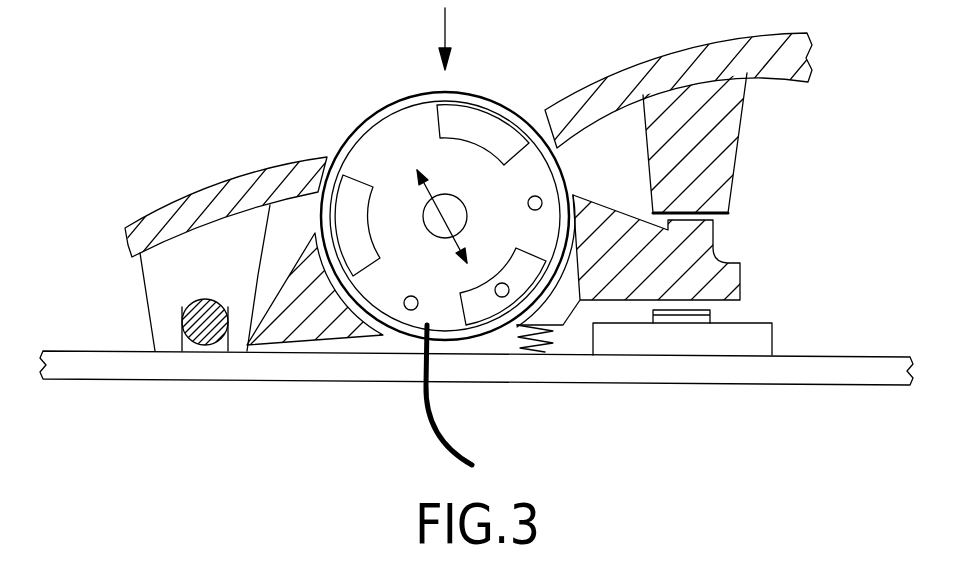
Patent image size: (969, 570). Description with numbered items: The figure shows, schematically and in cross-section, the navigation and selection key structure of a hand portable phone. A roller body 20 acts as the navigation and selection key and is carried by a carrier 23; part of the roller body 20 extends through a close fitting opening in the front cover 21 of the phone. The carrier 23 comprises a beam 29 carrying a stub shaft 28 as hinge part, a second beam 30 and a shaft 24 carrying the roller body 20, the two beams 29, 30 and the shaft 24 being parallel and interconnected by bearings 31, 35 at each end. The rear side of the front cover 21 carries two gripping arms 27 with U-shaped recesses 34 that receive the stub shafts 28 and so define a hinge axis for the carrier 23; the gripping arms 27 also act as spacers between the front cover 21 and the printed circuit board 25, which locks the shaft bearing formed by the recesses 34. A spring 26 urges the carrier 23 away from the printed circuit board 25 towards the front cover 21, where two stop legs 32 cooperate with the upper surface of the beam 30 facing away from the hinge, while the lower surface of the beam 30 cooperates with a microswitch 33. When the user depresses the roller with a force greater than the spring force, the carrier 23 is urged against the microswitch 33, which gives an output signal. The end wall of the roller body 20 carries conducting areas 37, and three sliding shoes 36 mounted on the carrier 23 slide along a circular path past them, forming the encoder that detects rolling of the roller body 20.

The roller body 20 is at (500, 106).
The front cover 21 is at (230, 186).
The carrier 23 is at (353, 353).
The shaft 24 is at (433, 224).
The printed circuit board 25 is at (437, 353).
The spring 26 is at (556, 345).
The gripping arms 27 is at (160, 273).
The stub shaft 28 is at (215, 352).
The beam 29 is at (274, 338).
The beam 30 is at (732, 277).
The bearing 31 is at (414, 340).
The stop legs 32 is at (735, 150).
The microswitch 33 is at (698, 322).
The U-shaped recesses 34 is at (193, 348).
The bearing 35 is at (474, 411).
The sliding shoes 36 is at (542, 200).
The conducting areas 37 is at (364, 189).